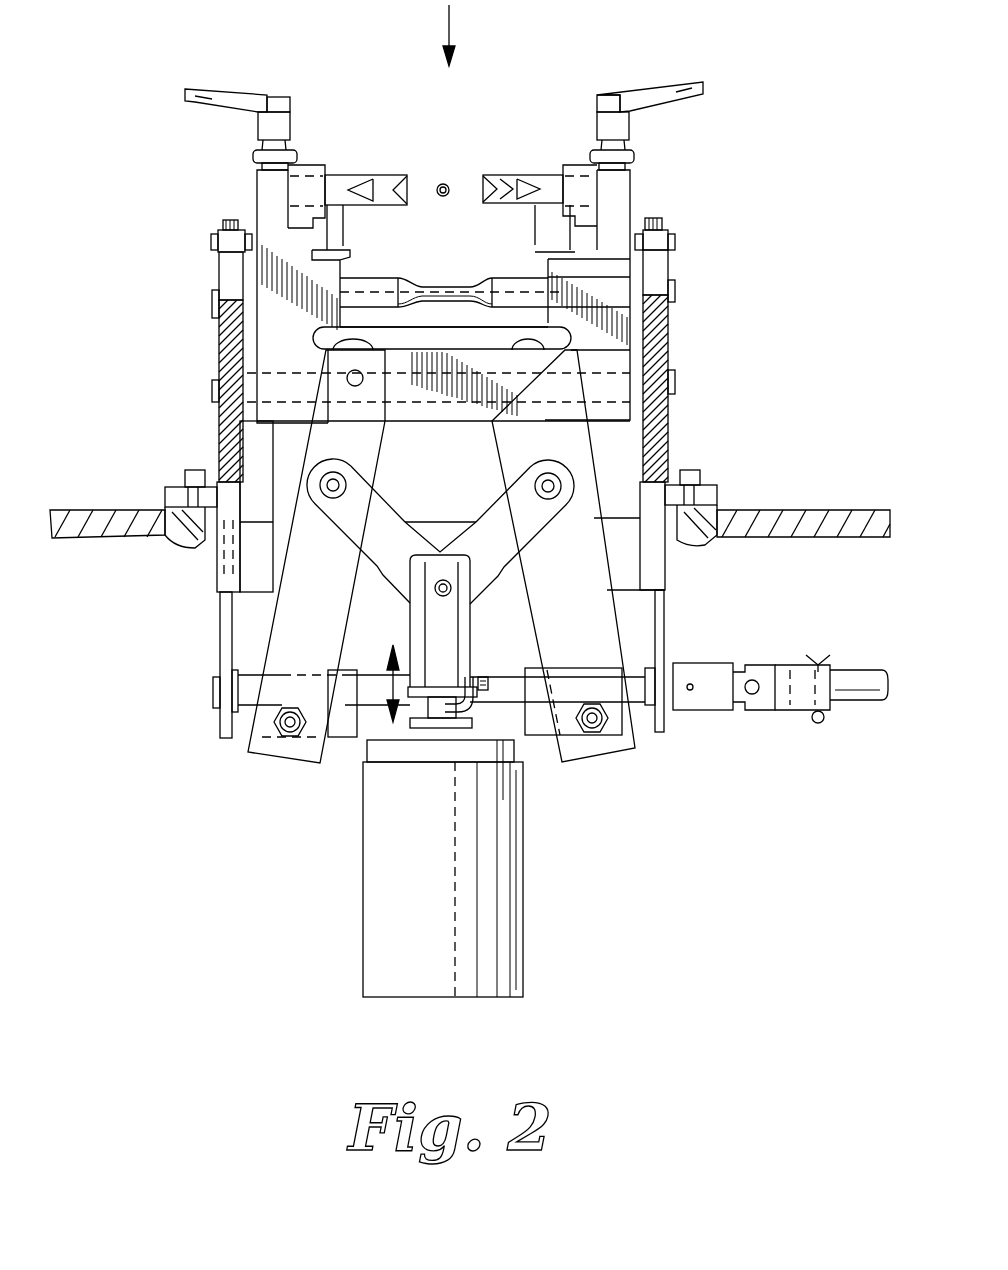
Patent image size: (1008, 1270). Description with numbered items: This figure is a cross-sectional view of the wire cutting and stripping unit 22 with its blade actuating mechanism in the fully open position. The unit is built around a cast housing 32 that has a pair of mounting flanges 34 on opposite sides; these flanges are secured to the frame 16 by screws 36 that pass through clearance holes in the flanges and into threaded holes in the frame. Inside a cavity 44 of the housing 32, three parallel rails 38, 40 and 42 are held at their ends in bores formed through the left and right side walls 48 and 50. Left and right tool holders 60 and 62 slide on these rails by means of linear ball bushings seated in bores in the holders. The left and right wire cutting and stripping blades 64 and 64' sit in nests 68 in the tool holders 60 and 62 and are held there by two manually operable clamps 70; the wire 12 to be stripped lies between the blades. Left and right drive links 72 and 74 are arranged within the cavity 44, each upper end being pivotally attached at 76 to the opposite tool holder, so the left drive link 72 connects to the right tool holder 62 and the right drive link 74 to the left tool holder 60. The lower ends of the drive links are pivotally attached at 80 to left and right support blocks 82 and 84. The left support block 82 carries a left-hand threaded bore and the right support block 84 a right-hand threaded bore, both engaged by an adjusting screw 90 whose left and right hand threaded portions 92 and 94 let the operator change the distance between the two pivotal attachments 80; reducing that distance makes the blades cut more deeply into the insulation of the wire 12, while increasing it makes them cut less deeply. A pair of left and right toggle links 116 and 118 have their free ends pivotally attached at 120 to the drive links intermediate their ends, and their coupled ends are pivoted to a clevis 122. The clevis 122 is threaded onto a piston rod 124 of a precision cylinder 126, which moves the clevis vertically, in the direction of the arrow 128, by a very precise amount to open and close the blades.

The wire 12 is at (443, 184).
The frame 16 is at (848, 508).
The wire cutting and stripping unit 22 is at (740, 130).
The cast housing 32 is at (688, 353).
The mounting flanges 34 is at (170, 497).
The screws 36 is at (187, 472).
The rail 38 is at (672, 388).
The rail 40 is at (671, 291).
The rail 42 is at (512, 280).
The cavity 44 is at (405, 266).
The left side wall 48 is at (218, 315).
The right side wall 50 is at (668, 330).
The left tool holder 60 is at (280, 262).
The right tool holder 62 is at (607, 270).
The left wire cutting and stripping blade 64 is at (366, 135).
The right wire cutting and stripping blade 64' is at (523, 143).
The nests 68 is at (314, 165).
The manually operable clamps 70 is at (228, 95).
The left drive link 72 is at (272, 612).
The right drive link 74 is at (648, 612).
The pivotal attachment 76 is at (347, 378).
The pivotal attachment 80 is at (290, 732).
The left support block 82 is at (342, 728).
The right support block 84 is at (530, 720).
The adjusting screw 90 is at (215, 695).
The left hand threaded portion 92 is at (367, 700).
The right hand threaded portion 94 is at (503, 787).
The left toggle link 116 is at (355, 520).
The right toggle link 118 is at (520, 527).
The pivotal attachment 120 is at (325, 478).
The clevis 122 is at (453, 620).
The piston rod 124 is at (438, 590).
The precision cylinder 126 is at (350, 962).
The arrow 128 is at (396, 722).